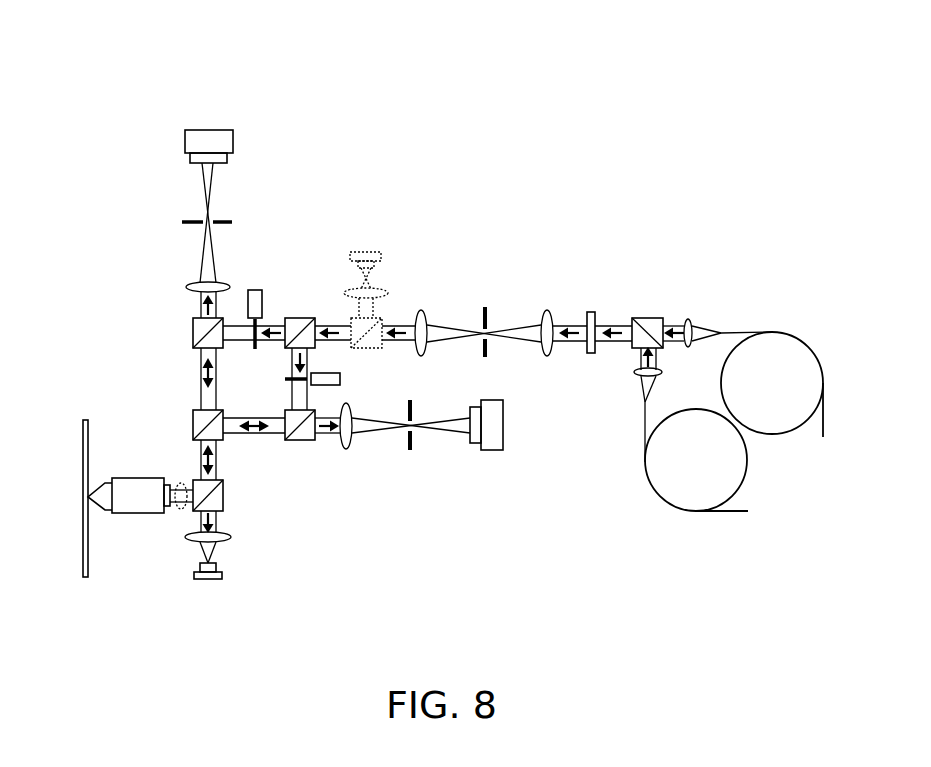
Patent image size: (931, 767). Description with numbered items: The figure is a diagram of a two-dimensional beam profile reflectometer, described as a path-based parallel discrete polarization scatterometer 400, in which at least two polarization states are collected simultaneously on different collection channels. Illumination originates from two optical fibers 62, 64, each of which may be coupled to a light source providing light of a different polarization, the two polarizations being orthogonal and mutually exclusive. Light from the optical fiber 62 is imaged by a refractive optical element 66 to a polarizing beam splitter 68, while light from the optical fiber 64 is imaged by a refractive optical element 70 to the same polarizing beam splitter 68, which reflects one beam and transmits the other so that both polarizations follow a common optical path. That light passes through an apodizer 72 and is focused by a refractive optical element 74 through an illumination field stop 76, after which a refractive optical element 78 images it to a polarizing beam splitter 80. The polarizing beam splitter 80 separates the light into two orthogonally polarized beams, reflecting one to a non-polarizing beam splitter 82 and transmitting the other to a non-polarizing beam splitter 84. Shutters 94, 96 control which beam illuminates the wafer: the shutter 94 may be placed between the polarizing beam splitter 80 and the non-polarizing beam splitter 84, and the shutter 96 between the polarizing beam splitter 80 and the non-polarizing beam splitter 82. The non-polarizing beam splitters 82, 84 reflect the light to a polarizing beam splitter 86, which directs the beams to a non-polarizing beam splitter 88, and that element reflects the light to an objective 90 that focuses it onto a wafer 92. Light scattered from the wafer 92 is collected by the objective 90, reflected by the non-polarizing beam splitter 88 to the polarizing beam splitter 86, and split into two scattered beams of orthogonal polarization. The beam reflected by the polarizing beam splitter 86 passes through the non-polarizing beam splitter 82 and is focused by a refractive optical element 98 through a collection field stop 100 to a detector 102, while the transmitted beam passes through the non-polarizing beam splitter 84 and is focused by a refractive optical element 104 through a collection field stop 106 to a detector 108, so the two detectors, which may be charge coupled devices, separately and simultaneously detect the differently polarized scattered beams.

The path-based parallel discrete polarization scatterometer 400 is at (170, 76).
The optical fiber 62 is at (653, 481).
The optical fiber 64 is at (808, 346).
The refractive optical element 66 is at (634, 376).
The polarizing beam splitter 68 is at (654, 317).
The refractive optical element 70 is at (689, 320).
The apodizer 72 is at (592, 310).
The refractive optical element 74 is at (549, 308).
The illumination field stop 76 is at (487, 305).
The refractive optical element 78 is at (423, 308).
The polarizing beam splitter 80 is at (298, 318).
The non-polarizing beam splitter 82 is at (305, 442).
The non-polarizing beam splitter 84 is at (191, 320).
The polarizing beam splitter 86 is at (191, 412).
The non-polarizing beam splitter 88 is at (225, 492).
The objective 90 is at (149, 477).
The wafer 92 is at (79, 434).
The shutter 94 is at (258, 288).
The shutter 96 is at (341, 377).
The refractive optical element 98 is at (349, 402).
The collection field stop 100 is at (413, 398).
The detector 102 is at (504, 420).
The refractive optical element 104 is at (190, 284).
The collection field stop 106 is at (230, 219).
The detector 108 is at (233, 128).